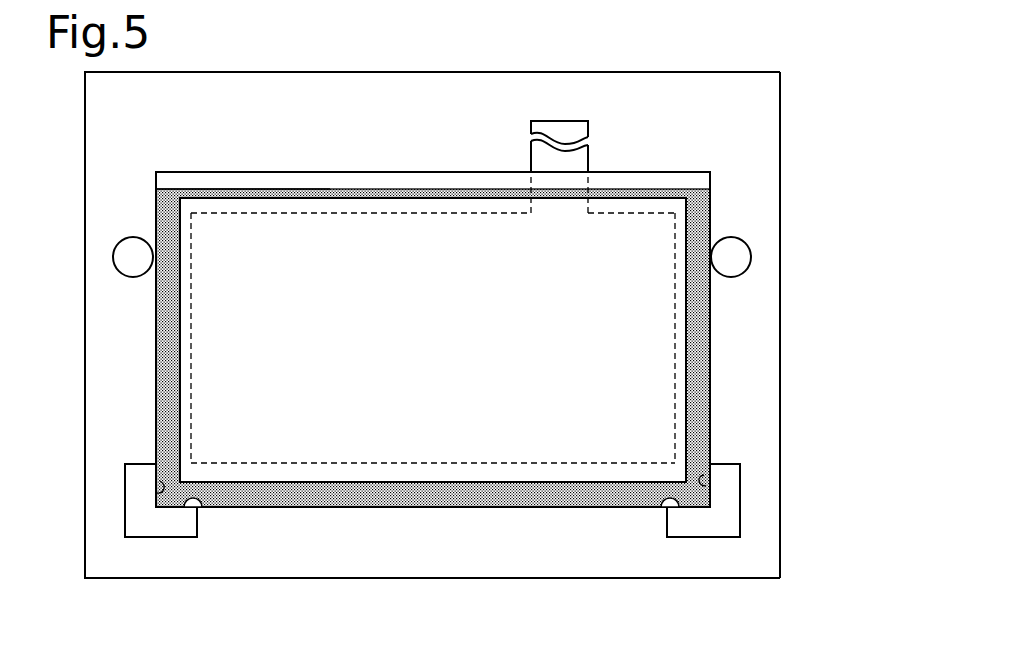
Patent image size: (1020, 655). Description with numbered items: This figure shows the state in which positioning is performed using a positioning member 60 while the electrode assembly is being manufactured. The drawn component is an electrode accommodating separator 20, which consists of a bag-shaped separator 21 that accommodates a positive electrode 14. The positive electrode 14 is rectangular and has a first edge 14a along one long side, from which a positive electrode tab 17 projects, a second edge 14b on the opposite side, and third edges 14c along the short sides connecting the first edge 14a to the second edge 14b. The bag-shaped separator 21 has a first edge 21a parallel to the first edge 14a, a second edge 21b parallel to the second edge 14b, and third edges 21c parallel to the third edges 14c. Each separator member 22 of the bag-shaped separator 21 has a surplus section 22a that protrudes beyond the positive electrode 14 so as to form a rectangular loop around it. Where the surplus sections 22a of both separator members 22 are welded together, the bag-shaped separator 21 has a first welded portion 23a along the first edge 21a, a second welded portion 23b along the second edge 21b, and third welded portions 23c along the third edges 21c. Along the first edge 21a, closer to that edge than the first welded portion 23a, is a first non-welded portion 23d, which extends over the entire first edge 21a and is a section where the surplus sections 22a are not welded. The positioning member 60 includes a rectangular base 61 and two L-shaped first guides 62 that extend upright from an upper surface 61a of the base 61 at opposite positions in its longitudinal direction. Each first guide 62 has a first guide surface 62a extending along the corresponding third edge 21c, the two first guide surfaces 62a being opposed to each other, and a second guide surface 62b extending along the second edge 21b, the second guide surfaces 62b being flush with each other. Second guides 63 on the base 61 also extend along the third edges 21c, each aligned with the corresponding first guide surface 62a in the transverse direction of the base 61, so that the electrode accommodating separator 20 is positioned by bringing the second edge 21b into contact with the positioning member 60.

The positive electrode 14 is at (498, 213).
The first edge 14a is at (366, 213).
The second edge 14b is at (408, 465).
The third edges 14c is at (192, 326).
The positive electrode tab 17 is at (586, 131).
The electrode accommodating separator 20 is at (710, 170).
The bag-shaped separator 21 is at (712, 181).
The first edge 21a is at (435, 172).
The second edge 21b is at (478, 507).
The third edges 21c is at (156, 305).
The separator member 22 is at (664, 178).
The surplus section 22a is at (200, 181).
The first welded portion 23a is at (273, 197).
The second welded portion 23b is at (314, 500).
The third welded portions 23c is at (167, 398).
The first non-welded portion 23d is at (353, 181).
The positioning member 60 is at (776, 383).
The base 61 is at (775, 289).
The upper surface 61a is at (774, 207).
The first guides 62 is at (152, 538).
The first guide surface 62a is at (157, 493).
The second guide surface 62b is at (199, 510).
The second guides 63 is at (122, 257).